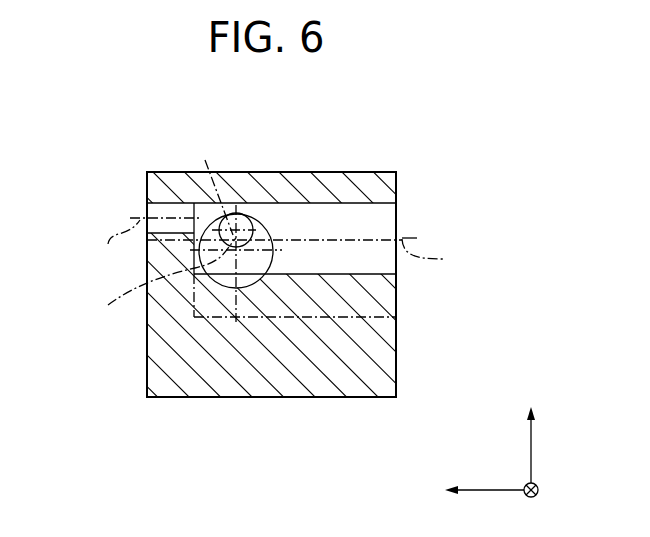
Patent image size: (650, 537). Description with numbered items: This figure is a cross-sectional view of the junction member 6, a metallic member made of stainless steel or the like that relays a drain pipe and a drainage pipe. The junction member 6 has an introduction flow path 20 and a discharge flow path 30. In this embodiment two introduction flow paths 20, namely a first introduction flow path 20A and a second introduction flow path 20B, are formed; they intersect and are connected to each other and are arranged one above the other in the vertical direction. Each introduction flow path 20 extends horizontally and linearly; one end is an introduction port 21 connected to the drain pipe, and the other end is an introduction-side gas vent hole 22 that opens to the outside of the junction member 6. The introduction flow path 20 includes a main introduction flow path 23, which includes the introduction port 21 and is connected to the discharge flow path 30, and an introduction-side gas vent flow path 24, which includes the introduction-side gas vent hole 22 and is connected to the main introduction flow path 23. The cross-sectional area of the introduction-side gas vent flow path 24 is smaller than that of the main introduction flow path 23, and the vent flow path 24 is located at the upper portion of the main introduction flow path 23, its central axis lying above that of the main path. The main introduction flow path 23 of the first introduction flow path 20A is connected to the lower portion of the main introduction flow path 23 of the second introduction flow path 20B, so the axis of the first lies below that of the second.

The junction member 6 is at (147, 172).
The introduction flow path 20 is at (271, 294).
The first introduction flow path 20A is at (259, 290).
The second introduction flow path 20B is at (344, 203).
The introduction port 21 is at (396, 221).
The introduction-side gas vent hole 22 is at (147, 209).
The main introduction flow path 23 is at (297, 203).
The introduction-side gas vent flow path 24 is at (177, 203).
The discharge flow path 30 is at (333, 320).